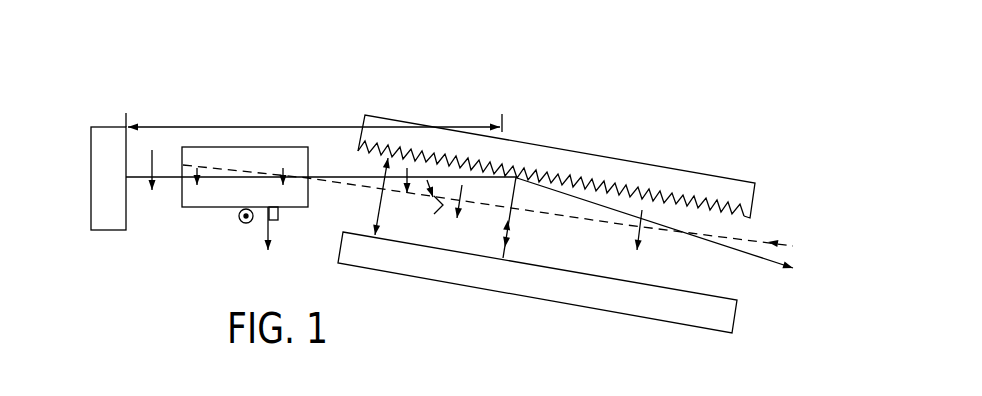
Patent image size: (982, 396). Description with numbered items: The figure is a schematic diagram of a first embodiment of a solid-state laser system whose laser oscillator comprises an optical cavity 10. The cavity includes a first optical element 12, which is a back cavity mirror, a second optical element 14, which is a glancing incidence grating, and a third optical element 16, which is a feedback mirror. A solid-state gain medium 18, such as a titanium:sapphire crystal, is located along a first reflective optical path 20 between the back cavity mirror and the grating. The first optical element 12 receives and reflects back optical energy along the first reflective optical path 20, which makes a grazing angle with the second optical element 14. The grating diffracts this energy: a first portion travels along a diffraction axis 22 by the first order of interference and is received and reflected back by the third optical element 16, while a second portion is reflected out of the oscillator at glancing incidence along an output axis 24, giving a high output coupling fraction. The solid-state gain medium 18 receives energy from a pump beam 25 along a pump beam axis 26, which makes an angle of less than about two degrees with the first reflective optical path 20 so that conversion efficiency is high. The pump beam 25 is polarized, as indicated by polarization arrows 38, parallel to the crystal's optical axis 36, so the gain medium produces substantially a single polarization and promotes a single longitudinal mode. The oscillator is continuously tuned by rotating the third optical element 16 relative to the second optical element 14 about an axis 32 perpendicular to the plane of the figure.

The optical cavity 10 is at (768, 118).
The first optical element 12 is at (91, 127).
The second optical element 14 is at (365, 115).
The third optical element 16 is at (645, 320).
The solid-state gain medium 18 is at (188, 150).
The first reflective optical path 20 is at (172, 180).
The diffraction axis 22 is at (502, 225).
The output axis 24 is at (765, 258).
The pump beam 25 is at (722, 236).
The pump beam axis 26 is at (343, 190).
The axis 32 is at (243, 225).
The optical axis 36 is at (270, 235).
The polarization arrows 38 is at (462, 207).